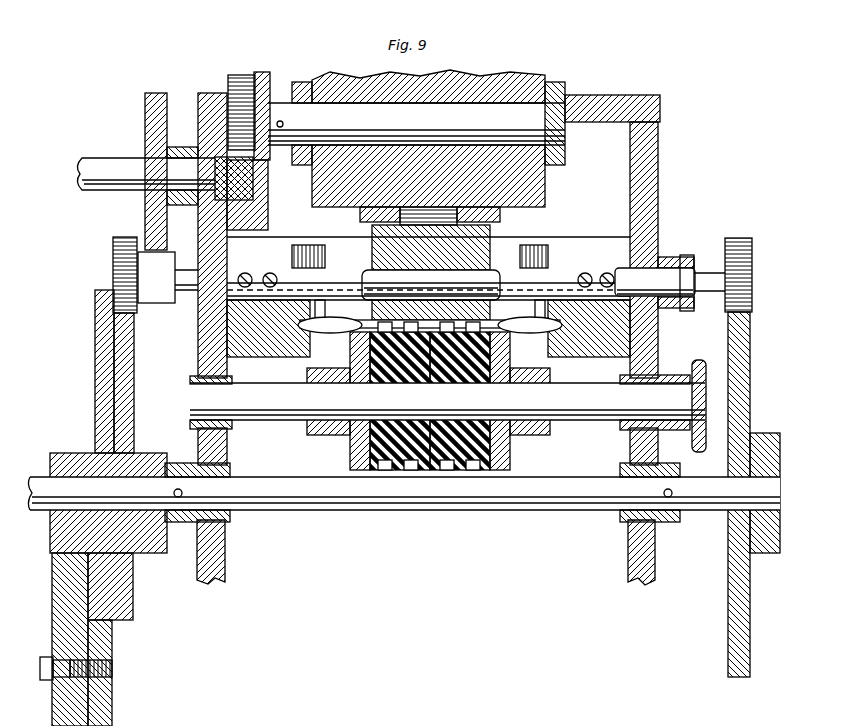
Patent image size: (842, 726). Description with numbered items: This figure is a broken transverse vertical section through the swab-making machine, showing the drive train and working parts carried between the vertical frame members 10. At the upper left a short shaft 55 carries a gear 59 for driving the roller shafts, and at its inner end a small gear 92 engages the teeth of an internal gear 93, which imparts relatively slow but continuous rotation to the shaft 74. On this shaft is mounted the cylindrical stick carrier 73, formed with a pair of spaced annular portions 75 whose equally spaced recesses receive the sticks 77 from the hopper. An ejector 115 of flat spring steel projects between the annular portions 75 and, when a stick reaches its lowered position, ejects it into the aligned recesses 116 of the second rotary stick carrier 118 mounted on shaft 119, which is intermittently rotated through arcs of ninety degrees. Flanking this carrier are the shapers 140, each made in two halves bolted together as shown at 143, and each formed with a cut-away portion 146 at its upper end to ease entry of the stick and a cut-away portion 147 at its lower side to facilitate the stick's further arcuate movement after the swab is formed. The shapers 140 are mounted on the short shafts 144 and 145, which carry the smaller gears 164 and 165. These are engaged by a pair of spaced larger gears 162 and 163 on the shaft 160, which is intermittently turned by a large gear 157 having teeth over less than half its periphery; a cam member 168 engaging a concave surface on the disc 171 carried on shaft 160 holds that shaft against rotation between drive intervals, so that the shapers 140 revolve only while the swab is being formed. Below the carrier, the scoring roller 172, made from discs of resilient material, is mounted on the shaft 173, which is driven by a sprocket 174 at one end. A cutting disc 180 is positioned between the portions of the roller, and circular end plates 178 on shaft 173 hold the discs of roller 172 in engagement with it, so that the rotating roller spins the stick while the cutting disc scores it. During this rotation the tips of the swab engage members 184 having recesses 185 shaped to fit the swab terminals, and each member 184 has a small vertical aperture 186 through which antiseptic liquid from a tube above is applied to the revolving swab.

The vertical frame members 10 is at (225, 553).
The short shaft 55 is at (103, 160).
The gear 59 is at (163, 93).
The cylindrical stick carrier 73 is at (470, 85).
The shaft 74 is at (517, 107).
The annular portions 75 is at (500, 222).
The stick 77 is at (430, 342).
The small gear 92 is at (262, 185).
The internal gear 93 is at (263, 72).
The ejector 115 is at (440, 234).
The recesses 116 is at (487, 228).
The second rotary stick carrier 118 is at (467, 252).
The shaft 119 is at (470, 285).
The shaper 140 is at (283, 243).
The bolts 143 is at (600, 268).
The shaft 144 is at (185, 268).
The shaft 145 is at (656, 275).
The cut-away portion 146 is at (318, 262).
The cut-away portion 147 is at (545, 300).
The large gear 157 is at (60, 592).
The shaft 160 is at (300, 478).
The larger gear 162 is at (128, 352).
The larger gear 163 is at (748, 352).
The smaller gear 164 is at (125, 237).
The smaller gear 165 is at (740, 238).
The cam member 168 is at (110, 712).
The disc 171 is at (98, 336).
The scoring roller 172 is at (405, 470).
The shaft 173 is at (286, 410).
The sprocket 174 is at (680, 375).
The circular end plates 178 is at (522, 438).
The cutting disc 180 is at (428, 465).
The members 184 is at (290, 342).
The recesses 185 is at (350, 346).
The vertical aperture 186 is at (320, 322).